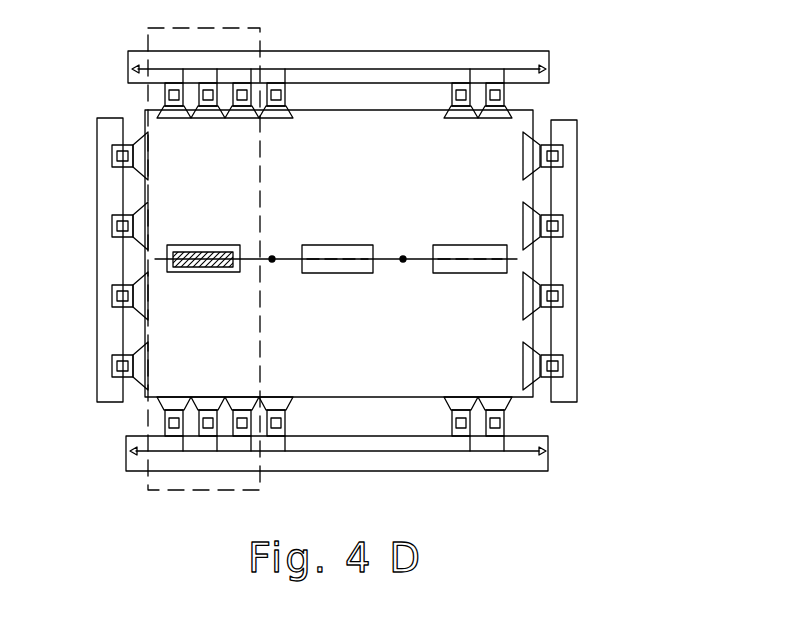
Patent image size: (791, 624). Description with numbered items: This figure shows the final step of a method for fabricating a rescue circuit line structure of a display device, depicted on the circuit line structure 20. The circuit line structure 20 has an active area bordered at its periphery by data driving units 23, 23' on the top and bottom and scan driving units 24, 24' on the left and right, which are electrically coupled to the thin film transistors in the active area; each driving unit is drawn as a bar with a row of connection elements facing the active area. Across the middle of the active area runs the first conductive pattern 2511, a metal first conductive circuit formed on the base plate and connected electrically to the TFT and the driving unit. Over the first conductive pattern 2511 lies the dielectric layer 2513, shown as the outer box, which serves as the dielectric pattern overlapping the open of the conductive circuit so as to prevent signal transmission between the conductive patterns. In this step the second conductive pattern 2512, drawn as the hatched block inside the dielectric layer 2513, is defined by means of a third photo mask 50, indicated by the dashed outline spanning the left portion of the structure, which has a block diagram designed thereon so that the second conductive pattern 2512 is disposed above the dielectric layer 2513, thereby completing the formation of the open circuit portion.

The circuit line structure 20 is at (630, 54).
The data driving unit 23 is at (347, 66).
The data driving unit 23' is at (337, 451).
The scan driving unit 24 is at (92, 260).
The scan driving unit 24' is at (581, 261).
The third photo mask 50 is at (205, 28).
The first conductive pattern 2511 is at (255, 255).
The second conductive pattern 2512 is at (197, 272).
The dielectric layer 2513 is at (207, 245).